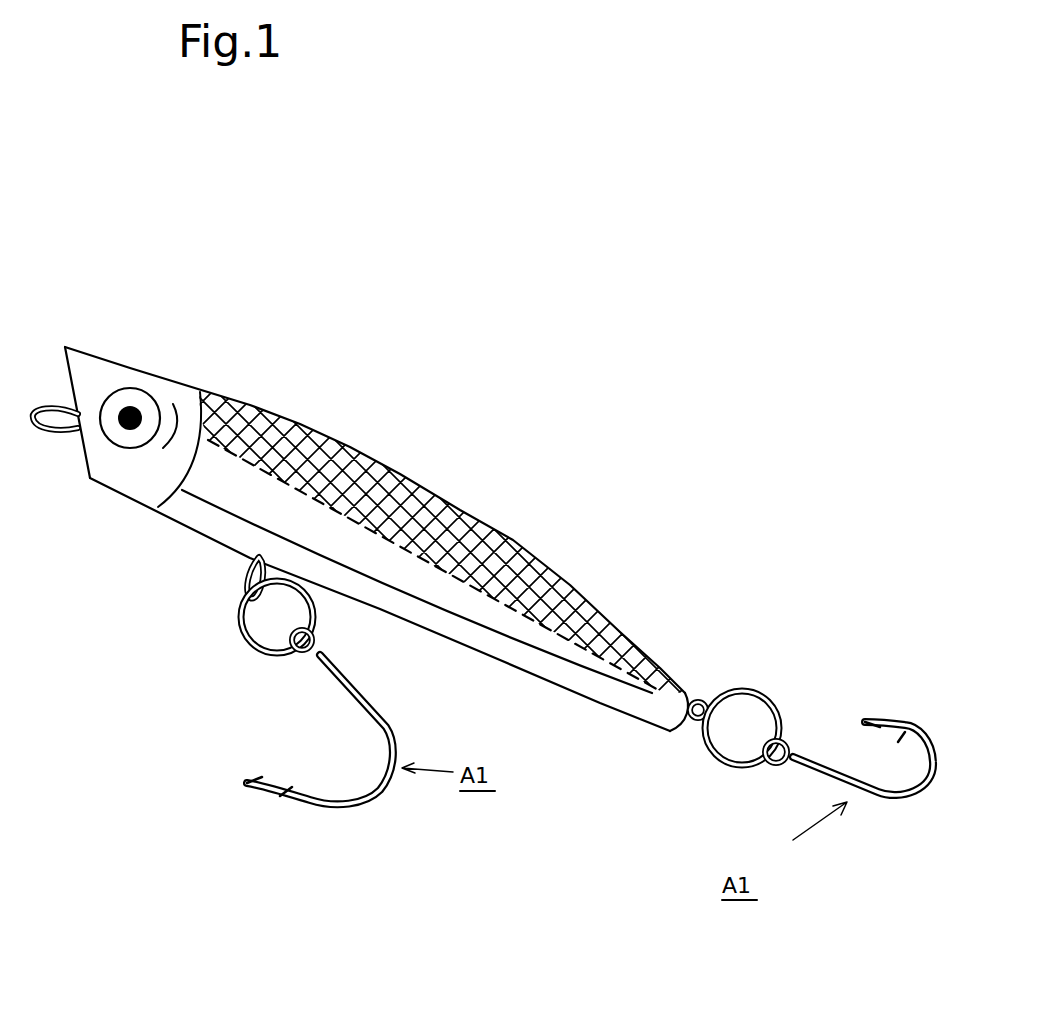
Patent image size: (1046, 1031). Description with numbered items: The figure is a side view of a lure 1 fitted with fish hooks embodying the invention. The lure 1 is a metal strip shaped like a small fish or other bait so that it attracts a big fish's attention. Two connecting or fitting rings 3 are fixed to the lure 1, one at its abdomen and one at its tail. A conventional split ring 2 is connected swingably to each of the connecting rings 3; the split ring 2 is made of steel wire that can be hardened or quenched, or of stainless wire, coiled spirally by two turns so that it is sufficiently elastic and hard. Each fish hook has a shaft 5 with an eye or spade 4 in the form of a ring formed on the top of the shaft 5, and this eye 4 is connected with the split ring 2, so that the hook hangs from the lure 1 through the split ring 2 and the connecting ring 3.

The lure 1 is at (302, 425).
The split ring 2 is at (253, 638).
The connecting ring 3 is at (243, 580).
The eye 4 is at (325, 647).
The shaft 5 is at (338, 683).